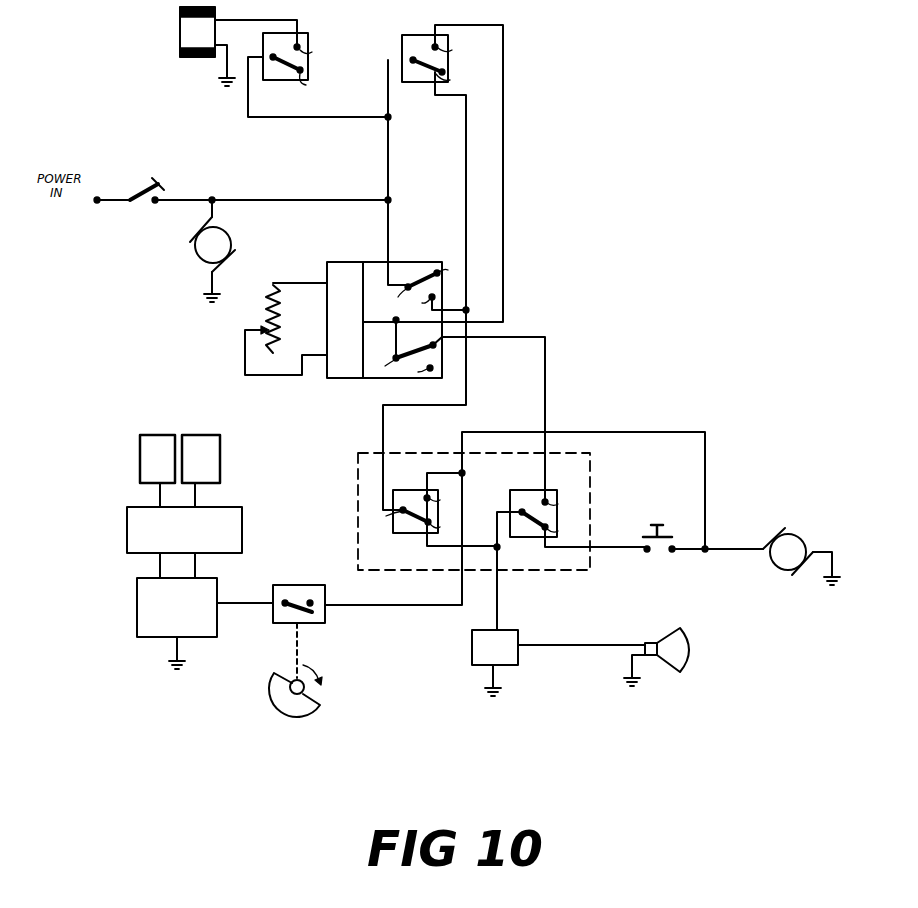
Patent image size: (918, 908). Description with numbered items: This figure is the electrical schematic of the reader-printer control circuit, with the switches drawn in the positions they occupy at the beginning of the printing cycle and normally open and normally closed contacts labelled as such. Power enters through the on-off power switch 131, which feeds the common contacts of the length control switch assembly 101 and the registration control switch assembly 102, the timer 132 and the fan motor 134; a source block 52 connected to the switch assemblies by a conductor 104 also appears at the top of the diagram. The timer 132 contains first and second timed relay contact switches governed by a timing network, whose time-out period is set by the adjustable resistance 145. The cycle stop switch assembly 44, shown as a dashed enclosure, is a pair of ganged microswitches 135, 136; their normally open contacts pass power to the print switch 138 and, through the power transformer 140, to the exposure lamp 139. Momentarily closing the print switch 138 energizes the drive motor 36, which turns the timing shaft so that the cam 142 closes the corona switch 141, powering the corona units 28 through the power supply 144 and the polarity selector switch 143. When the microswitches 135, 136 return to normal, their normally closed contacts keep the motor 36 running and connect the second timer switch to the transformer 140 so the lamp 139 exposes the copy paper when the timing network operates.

The power source 52 is at (180, 31).
The length control switch assembly 101 is at (301, 31).
The registration control switch assembly 102 is at (424, 33).
The conductor 104 is at (402, 46).
The power switch 131 is at (147, 190).
The fan motor 134 is at (201, 249).
The timer 132 is at (371, 260).
The adjustable resistance 145 is at (268, 318).
The corona units 28 is at (193, 438).
The polarity selector switch 143 is at (230, 510).
The power supply 144 is at (137, 603).
The corona switch 141 is at (311, 623).
The cam 142 is at (289, 705).
The cycle stop switch assembly 44 is at (366, 478).
The microswitch 135 is at (412, 535).
The microswitch 136 is at (532, 490).
The print switch 138 is at (683, 524).
The drive motor 36 is at (791, 542).
The power transformer 140 is at (502, 634).
The exposure lamp 139 is at (672, 640).